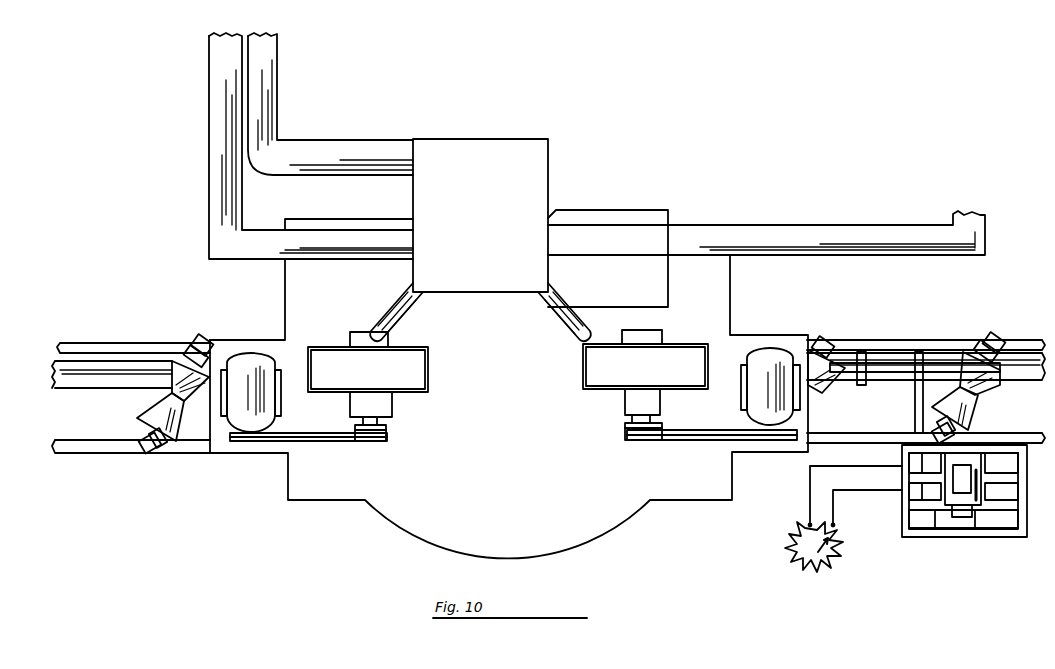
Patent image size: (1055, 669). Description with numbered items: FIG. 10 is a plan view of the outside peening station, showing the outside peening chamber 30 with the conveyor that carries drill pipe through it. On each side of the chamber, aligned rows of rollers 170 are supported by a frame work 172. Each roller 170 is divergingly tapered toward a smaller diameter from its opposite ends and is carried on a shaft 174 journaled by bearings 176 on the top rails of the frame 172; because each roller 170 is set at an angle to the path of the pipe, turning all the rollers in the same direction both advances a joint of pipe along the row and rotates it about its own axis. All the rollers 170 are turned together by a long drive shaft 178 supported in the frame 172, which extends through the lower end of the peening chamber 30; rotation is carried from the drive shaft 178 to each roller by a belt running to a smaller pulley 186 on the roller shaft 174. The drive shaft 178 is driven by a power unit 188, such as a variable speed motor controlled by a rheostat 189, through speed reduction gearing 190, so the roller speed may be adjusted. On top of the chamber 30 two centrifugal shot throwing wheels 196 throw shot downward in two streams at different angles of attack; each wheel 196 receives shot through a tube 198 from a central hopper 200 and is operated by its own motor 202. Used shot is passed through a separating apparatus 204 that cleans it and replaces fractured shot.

The outside peening chamber 30 is at (512, 484).
The roller 170 is at (150, 416).
The frame work 172 is at (1030, 440).
The shaft 174 is at (162, 447).
The bearings 176 is at (206, 344).
The drive shaft 178 is at (890, 363).
The pulley 186 is at (195, 350).
The power unit 188 is at (958, 500).
The rheostat 189 is at (798, 556).
The speed reduction gearing 190 is at (985, 518).
The centrifugal shot throwing wheel 196 is at (414, 381).
The tube 198 is at (403, 307).
The central hopper 200 is at (499, 241).
The motor 202 is at (262, 396).
The separating apparatus 204 is at (504, 139).